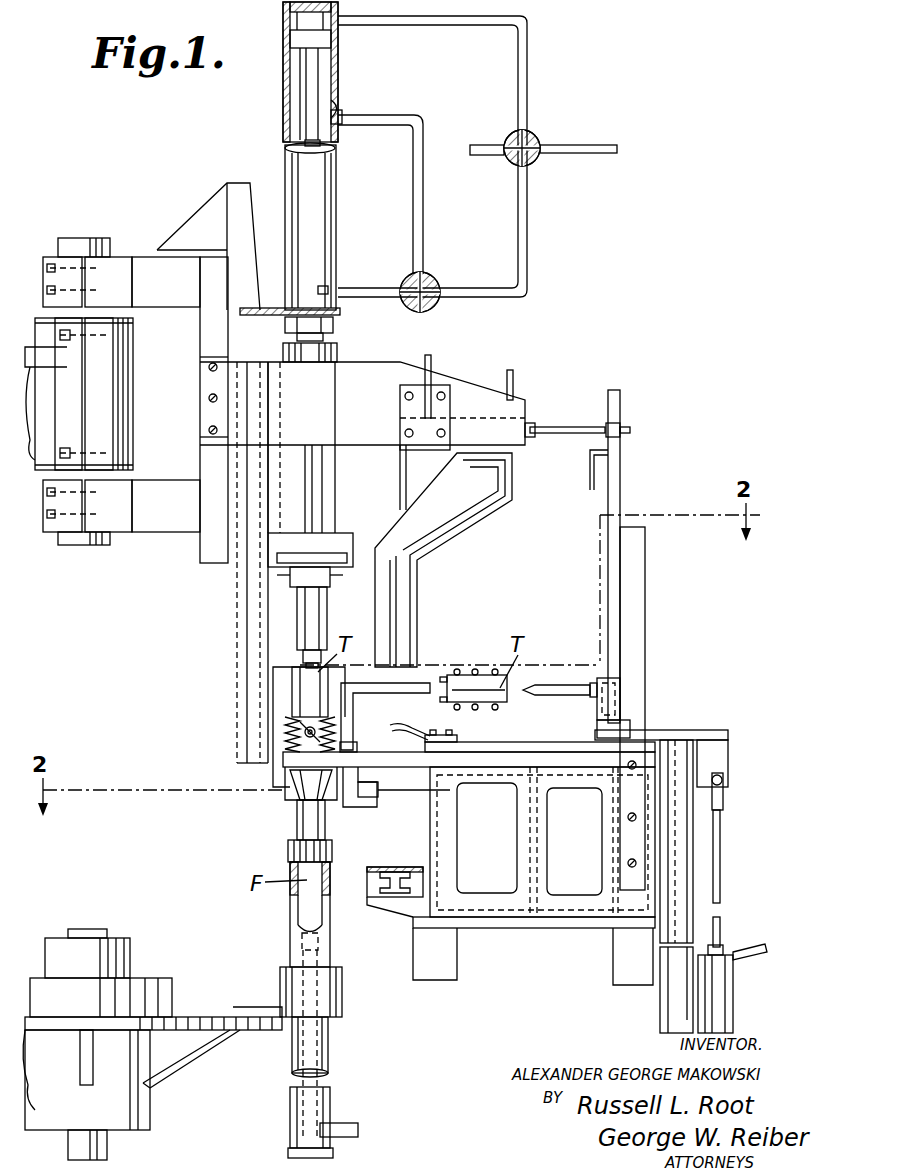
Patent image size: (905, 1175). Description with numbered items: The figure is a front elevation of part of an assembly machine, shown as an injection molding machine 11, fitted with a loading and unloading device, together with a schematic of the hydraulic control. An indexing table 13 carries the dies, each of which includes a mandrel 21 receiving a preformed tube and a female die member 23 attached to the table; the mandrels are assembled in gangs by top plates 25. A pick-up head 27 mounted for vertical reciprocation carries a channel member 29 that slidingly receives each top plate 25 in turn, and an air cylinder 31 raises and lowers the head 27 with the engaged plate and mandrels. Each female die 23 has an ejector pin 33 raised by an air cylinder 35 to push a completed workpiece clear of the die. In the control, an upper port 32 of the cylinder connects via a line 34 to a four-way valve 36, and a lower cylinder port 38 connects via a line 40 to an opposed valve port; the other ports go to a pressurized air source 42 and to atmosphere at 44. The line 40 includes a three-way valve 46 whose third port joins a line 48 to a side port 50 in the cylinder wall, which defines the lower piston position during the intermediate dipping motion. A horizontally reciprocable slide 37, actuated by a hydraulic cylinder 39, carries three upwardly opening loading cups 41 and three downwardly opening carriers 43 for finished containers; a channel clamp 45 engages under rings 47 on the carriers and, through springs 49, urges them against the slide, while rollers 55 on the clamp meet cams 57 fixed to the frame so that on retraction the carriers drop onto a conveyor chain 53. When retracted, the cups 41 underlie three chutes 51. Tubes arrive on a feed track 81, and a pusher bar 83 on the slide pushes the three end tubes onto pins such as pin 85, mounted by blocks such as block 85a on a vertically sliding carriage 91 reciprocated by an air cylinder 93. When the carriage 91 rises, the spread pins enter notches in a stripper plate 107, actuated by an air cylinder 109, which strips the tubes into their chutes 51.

The injection molding machine 11 is at (236, 171).
The indexing table 13 is at (193, 1020).
The mandrel 21 is at (318, 618).
The female die member 23 is at (300, 940).
The top plate 25 is at (318, 560).
The pick-up head 27 is at (320, 495).
The channel member 29 is at (276, 548).
The air cylinder 31 is at (330, 183).
The upper port 32 is at (325, 30).
The ejector pin 33 is at (318, 960).
The line 34 is at (410, 20).
The air cylinder 35 is at (298, 1053).
The four-way valve 36 is at (532, 136).
The slide 37 is at (392, 763).
The lower cylinder port 38 is at (316, 290).
The hydraulic cylinder 39 is at (563, 800).
The line 40 is at (527, 263).
The loading cup 41 is at (302, 683).
The pressurized air source 42 is at (593, 153).
The carrier 43 is at (300, 848).
The atmosphere exhaust 44 is at (483, 150).
The channel clamp 45 is at (285, 797).
The three-way valve 46 is at (433, 280).
The ring 47 is at (308, 800).
The line 48 is at (423, 188).
The spring 49 is at (283, 727).
The side port 50 is at (335, 95).
The chute 51 is at (398, 620).
The conveyor chain 53 is at (386, 867).
The roller 55 is at (303, 720).
The cam 57 is at (435, 733).
The feed track 81 is at (494, 670).
The pusher bar 83 is at (413, 683).
The pin 85 is at (548, 688).
The block 85a is at (600, 703).
The carriage 91 is at (661, 730).
The air cylinder 93 is at (720, 992).
The stripper plate 107 is at (590, 470).
The air cylinder 109 is at (472, 418).